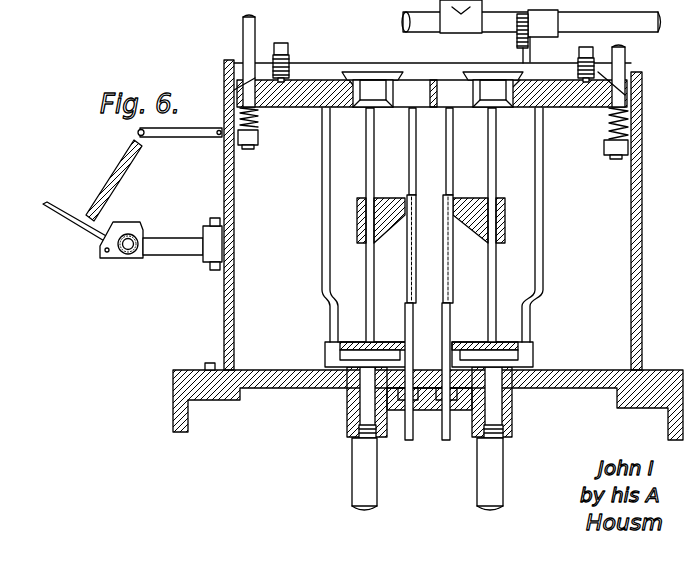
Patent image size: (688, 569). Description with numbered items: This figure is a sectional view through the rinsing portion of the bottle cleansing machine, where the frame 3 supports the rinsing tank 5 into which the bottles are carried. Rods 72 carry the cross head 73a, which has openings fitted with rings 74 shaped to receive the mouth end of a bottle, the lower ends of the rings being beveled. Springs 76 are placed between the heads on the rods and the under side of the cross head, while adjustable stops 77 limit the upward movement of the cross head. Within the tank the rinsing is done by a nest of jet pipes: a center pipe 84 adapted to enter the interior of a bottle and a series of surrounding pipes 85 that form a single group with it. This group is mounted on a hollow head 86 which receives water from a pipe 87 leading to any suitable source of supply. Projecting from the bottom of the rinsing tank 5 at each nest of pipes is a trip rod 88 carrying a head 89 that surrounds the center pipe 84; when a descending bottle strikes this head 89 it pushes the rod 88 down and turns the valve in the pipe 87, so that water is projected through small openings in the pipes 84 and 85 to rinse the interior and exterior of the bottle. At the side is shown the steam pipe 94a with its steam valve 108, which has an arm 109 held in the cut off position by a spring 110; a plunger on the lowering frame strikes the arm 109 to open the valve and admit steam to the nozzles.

The frame 3 is at (190, 370).
The rinsing tank 5 is at (642, 247).
The rods 72 is at (253, 33).
The cross head 73a is at (303, 103).
The rings 74 is at (345, 78).
The springs 76 is at (258, 133).
The adjustable stops 77 is at (290, 58).
The center pipe 84 is at (374, 143).
The pipes 85 is at (330, 171).
The hollow head 86 is at (380, 353).
The pipe 87 is at (374, 492).
The trip rod 88 is at (443, 328).
The head 89 is at (393, 193).
The steam pipe 94a is at (130, 254).
The steam valve 108 is at (131, 238).
The arm 109 is at (62, 218).
The spring 110 is at (112, 178).